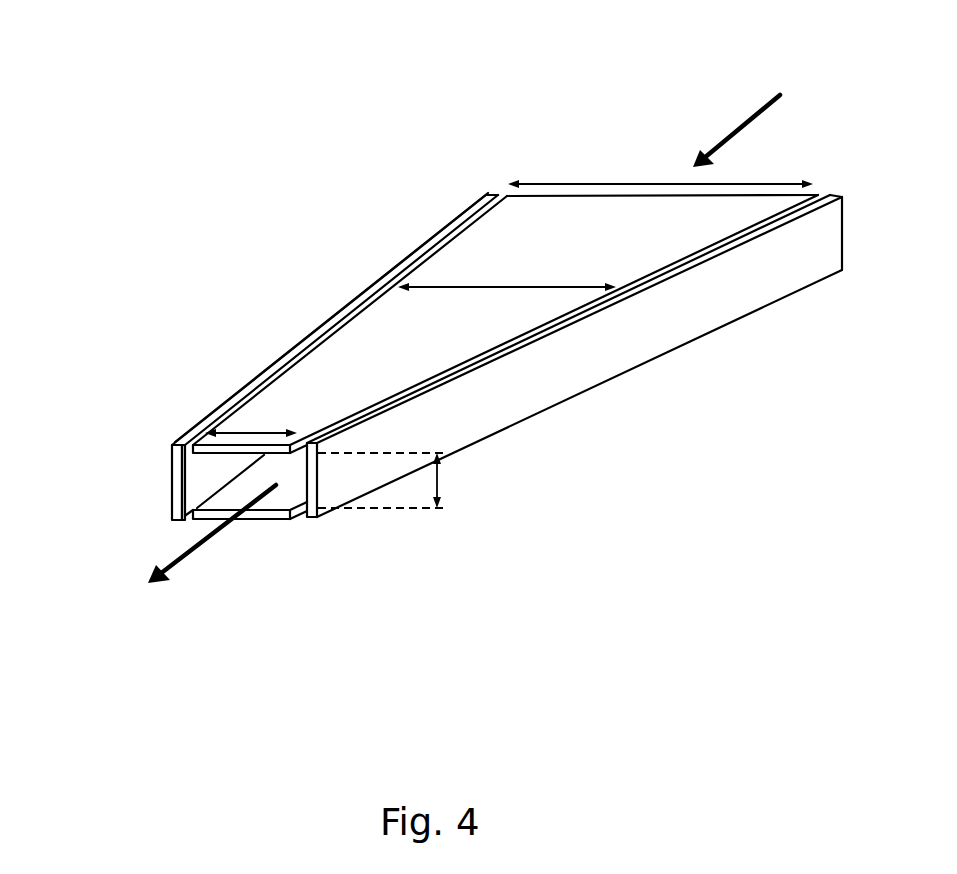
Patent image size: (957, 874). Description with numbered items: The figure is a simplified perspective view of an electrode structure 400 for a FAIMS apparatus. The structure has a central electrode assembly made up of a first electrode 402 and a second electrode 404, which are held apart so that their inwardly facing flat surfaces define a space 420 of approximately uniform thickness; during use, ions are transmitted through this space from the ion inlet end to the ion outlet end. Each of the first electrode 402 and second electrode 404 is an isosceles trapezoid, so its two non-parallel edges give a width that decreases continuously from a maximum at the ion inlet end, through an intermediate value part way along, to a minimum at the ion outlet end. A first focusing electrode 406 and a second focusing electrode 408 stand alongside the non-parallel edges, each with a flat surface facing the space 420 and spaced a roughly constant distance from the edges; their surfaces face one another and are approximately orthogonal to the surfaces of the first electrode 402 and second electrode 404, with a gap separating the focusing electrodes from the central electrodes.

The electrode structure 400 is at (527, 118).
The first electrode 402 is at (507, 232).
The second electrode 404 is at (277, 520).
The first focusing electrode 406 is at (288, 351).
The second focusing electrode 408 is at (563, 393).
The space 420 is at (210, 472).